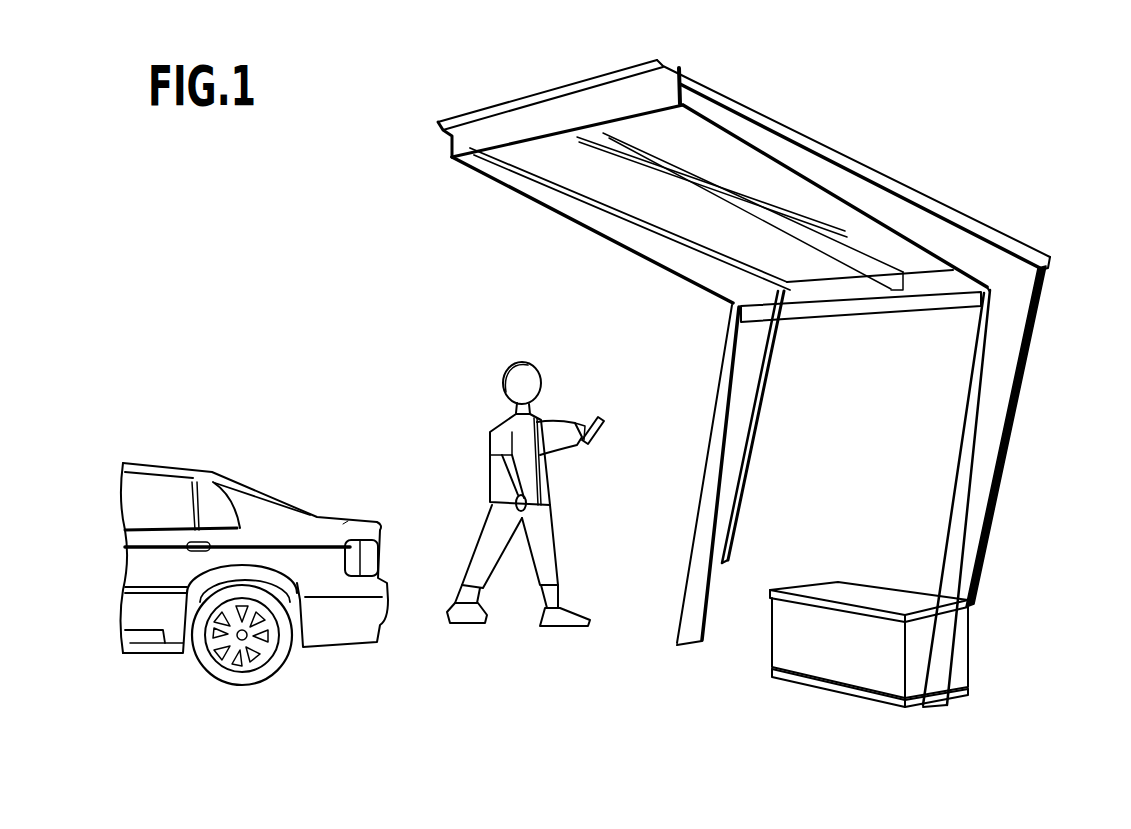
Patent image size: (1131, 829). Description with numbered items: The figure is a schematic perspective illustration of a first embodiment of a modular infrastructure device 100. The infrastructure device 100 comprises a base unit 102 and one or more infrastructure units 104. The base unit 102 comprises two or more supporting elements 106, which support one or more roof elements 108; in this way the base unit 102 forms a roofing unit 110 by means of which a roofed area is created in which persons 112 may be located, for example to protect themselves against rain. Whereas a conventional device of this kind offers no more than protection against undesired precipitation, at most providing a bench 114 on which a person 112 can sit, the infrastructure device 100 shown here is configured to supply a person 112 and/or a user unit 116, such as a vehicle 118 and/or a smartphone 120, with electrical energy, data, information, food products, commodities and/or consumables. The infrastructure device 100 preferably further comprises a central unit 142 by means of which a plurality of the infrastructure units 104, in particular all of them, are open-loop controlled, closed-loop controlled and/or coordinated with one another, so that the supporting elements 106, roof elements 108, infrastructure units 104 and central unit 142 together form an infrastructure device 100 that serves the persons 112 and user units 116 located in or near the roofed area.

The infrastructure device 100 is at (795, 110).
The base unit 102 is at (1003, 204).
The infrastructure unit 104 is at (882, 672).
The supporting element 106 is at (723, 435).
The roof element 108 is at (817, 203).
The roofing unit 110 is at (497, 200).
The person 112 is at (568, 382).
The bench 114 is at (858, 595).
The user unit 116 is at (337, 527).
The vehicle 118 is at (323, 622).
The smartphone 120 is at (597, 447).
The central unit 142 is at (803, 635).